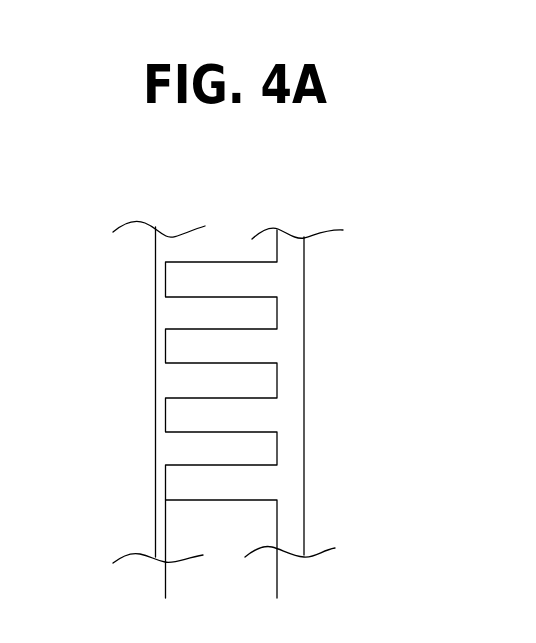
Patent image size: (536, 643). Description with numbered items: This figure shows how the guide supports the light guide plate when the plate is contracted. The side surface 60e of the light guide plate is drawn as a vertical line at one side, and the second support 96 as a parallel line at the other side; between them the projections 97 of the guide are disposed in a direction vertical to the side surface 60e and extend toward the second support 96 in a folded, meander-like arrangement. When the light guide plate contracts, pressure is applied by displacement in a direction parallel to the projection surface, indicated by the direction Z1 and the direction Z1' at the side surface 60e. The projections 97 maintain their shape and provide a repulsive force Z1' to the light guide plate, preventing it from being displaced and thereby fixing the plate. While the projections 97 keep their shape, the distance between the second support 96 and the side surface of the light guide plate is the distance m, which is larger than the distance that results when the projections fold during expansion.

The side surface 60e is at (158, 247).
The projections 97 is at (205, 275).
The second support 96 is at (293, 352).
The direction of pressure Z1 is at (122, 292).
The repulsive force Z1' is at (224, 313).
The distance m is at (276, 584).